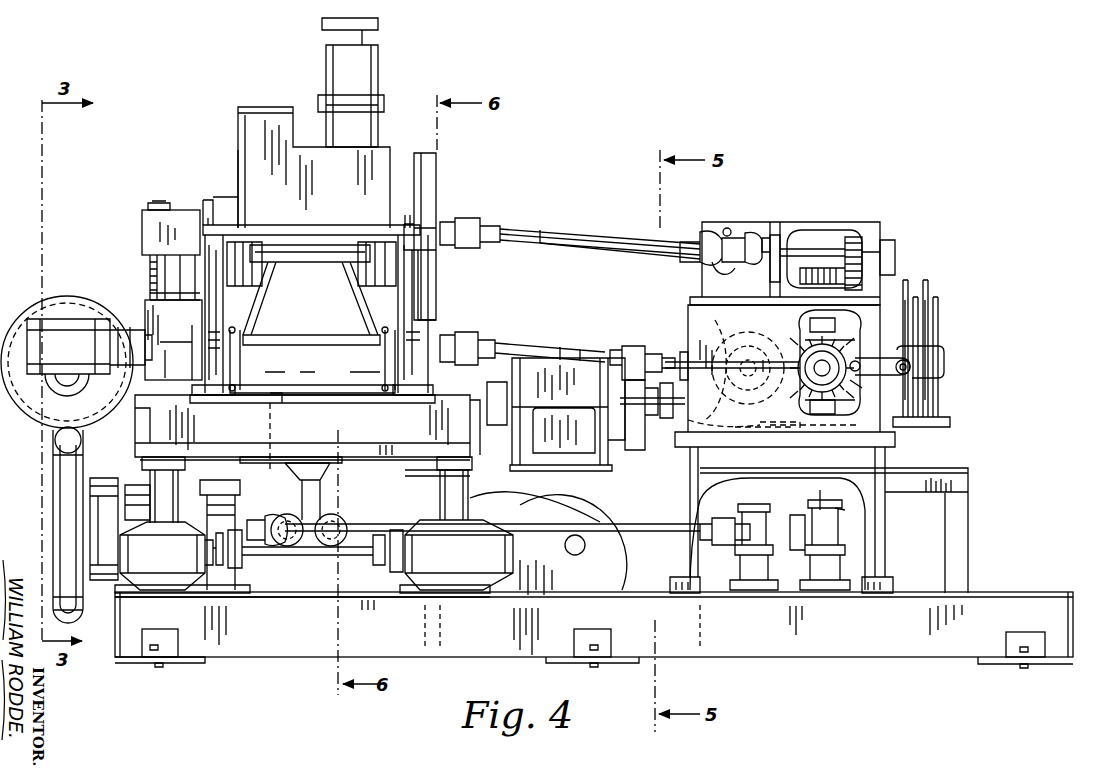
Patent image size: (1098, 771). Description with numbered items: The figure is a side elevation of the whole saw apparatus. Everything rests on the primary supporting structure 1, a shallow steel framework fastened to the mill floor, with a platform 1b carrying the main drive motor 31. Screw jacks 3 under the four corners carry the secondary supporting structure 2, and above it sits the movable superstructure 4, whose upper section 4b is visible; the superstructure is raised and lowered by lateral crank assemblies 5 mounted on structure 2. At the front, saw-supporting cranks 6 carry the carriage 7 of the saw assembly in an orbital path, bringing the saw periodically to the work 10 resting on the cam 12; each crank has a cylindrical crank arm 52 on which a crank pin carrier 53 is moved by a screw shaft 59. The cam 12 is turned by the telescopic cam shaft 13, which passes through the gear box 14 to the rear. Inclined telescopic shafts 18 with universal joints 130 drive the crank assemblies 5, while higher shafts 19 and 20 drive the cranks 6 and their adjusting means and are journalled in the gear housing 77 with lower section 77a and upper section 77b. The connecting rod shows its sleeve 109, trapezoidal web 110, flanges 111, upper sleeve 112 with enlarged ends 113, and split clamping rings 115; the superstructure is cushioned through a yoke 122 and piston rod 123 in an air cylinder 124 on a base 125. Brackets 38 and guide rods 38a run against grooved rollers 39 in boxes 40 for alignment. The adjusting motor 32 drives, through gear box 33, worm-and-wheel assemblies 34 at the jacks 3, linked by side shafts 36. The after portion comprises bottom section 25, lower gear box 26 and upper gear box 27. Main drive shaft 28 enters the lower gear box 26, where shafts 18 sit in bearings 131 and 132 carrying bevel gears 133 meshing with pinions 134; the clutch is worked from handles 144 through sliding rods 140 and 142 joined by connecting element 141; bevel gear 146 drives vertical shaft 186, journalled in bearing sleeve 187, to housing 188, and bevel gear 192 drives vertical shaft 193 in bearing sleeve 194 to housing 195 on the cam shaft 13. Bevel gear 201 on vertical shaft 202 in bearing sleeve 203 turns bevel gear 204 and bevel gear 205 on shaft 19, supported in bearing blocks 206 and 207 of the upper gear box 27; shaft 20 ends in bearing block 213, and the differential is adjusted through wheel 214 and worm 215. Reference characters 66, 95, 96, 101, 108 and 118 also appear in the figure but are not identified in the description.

The primary supporting structure 1 is at (113, 645).
The platform 1b is at (968, 492).
The secondary supporting structure 2 is at (143, 424).
The jacks 3 is at (180, 482).
The superstructure 4 is at (243, 107).
The upper section of superstructure 4b is at (246, 157).
The lateral crank assemblies 5 is at (322, 250).
The saw-supporting cranks 6 is at (138, 252).
The carriage 7 is at (100, 372).
The work 10 is at (56, 433).
The cam 12 is at (50, 488).
The cam shaft 13 is at (405, 512).
The gear box 14 is at (108, 478).
The inclined telescopic shafts 18 is at (548, 345).
The inclined telescopic shaft 19 is at (622, 238).
The inclined telescopic shaft 20 is at (620, 258).
The bottom section 25 is at (888, 460).
The lower gear box 26 is at (882, 305).
The upper gear box 27 is at (875, 222).
The main drive shaft 28 is at (822, 368).
The main drive motor 31 is at (592, 350).
The adjusting motor 32 is at (588, 508).
The gear box 33 is at (530, 508).
The worm-and-wheel assemblies 34 is at (142, 520).
The side shafts 36 is at (300, 555).
The brackets 38 is at (312, 462).
The guide rods 38a is at (315, 490).
The rollers 39 is at (288, 500).
The boxes 40 is at (295, 598).
The crank arm 52 is at (172, 341).
The crank pin carrier 53 is at (143, 300).
The screw shaft 59 is at (145, 272).
The cap 66 is at (165, 203).
The gear housing 77 is at (436, 155).
The lower section of gear housing 77a is at (436, 268).
The upper section of gear housing 77b is at (430, 195).
The post 95 is at (220, 228).
The platform 96 is at (205, 390).
The pin 101 is at (871, 389).
The universal joint 108 is at (463, 335).
The sleeve 109 is at (322, 340).
The trapezoidal web 110 is at (366, 308).
The flanges 111 is at (262, 302).
The sleeve 112 is at (312, 265).
The enlarged ends 113 is at (311, 269).
The split clamping rings 115 is at (235, 357).
The housing wall 118 is at (709, 373).
The yoke 122 is at (312, 372).
The piston rod 123 is at (282, 412).
The air cylinder 124 is at (252, 460).
The base 125 is at (245, 595).
The universal joints 130 is at (638, 348).
The bearings 131 is at (682, 352).
The bearings 132 is at (797, 388).
The bevel gear 133 is at (748, 354).
The pinions 134 is at (748, 356).
The sliding rod 140 is at (858, 362).
The connecting element 141 is at (882, 366).
The sliding rod 142 is at (898, 350).
The operating handles 144 is at (935, 296).
The bevel gear 146 is at (712, 364).
The vertical shaft 186 is at (748, 492).
The bearing sleeve 187 is at (721, 415).
The housing 188 is at (774, 508).
The bevel gear 192 is at (825, 406).
The vertical shaft 193 is at (835, 492).
The bearing sleeve 194 is at (797, 433).
The housing 195 is at (848, 508).
The bevel gear 201 is at (850, 340).
The vertical shaft 202 is at (825, 324).
The bearing sleeve 203 is at (845, 330).
The bevel gear 204 is at (824, 259).
The bevel gear 205 is at (848, 235).
The bearing block 206 is at (892, 242).
The bearing block 207 is at (772, 232).
The bearing block 213 is at (700, 230).
The wheel 214 is at (738, 281).
The worm 215 is at (729, 227).